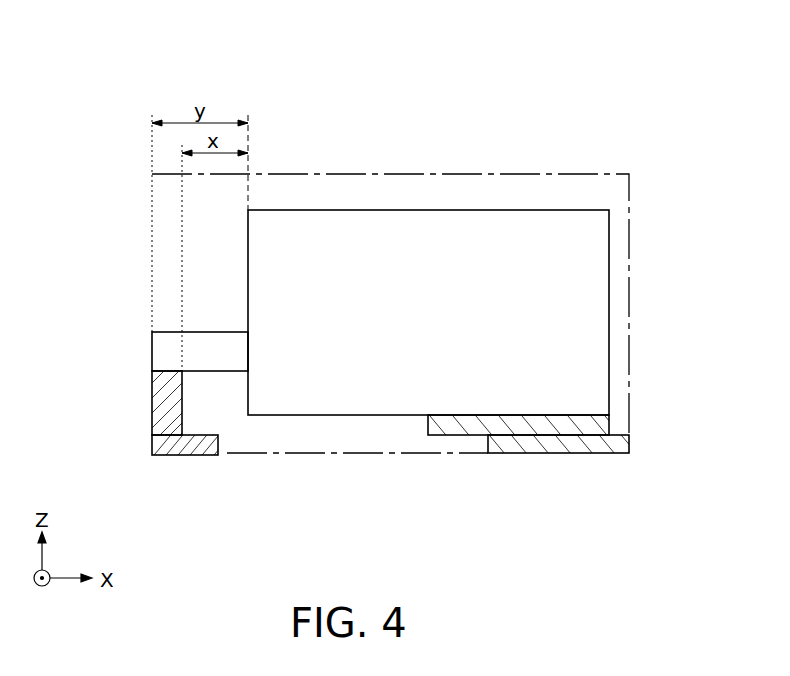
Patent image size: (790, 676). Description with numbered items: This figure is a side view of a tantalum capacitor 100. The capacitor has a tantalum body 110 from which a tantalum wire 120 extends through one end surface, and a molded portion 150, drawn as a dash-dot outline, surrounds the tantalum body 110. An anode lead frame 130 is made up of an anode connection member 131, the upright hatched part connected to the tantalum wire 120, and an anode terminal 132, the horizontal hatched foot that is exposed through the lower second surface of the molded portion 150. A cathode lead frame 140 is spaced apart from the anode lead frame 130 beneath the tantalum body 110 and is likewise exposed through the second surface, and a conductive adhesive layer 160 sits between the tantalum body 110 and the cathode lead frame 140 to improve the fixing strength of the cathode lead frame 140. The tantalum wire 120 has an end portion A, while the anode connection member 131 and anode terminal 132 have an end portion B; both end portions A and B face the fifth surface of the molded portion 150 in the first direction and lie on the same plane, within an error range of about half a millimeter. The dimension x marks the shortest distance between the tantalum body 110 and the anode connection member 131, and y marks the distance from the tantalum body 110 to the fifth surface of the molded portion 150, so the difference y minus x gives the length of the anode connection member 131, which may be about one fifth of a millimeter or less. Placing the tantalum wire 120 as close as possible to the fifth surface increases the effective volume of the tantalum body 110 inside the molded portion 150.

The tantalum capacitor 100 is at (359, 75).
The tantalum body 110 is at (596, 283).
The tantalum wire 120 is at (160, 345).
The anode lead frame 130 is at (154, 449).
The anode connection member 131 is at (152, 430).
The anode terminal 132 is at (170, 455).
The cathode lead frame 140 is at (593, 453).
The molded portion 150 is at (567, 175).
The conductive adhesive layer 160 is at (463, 437).
The end portion of the tantalum wire A is at (152, 355).
The end portion of the anode connection member and anode terminal B is at (152, 405).